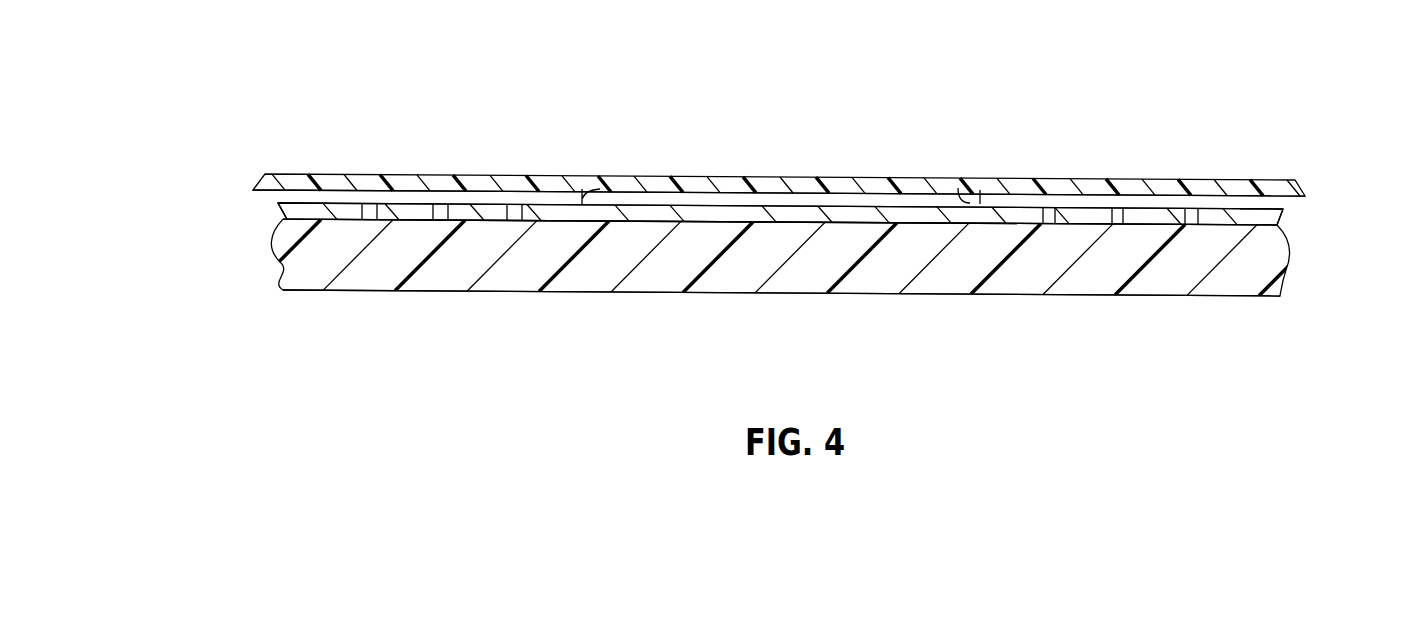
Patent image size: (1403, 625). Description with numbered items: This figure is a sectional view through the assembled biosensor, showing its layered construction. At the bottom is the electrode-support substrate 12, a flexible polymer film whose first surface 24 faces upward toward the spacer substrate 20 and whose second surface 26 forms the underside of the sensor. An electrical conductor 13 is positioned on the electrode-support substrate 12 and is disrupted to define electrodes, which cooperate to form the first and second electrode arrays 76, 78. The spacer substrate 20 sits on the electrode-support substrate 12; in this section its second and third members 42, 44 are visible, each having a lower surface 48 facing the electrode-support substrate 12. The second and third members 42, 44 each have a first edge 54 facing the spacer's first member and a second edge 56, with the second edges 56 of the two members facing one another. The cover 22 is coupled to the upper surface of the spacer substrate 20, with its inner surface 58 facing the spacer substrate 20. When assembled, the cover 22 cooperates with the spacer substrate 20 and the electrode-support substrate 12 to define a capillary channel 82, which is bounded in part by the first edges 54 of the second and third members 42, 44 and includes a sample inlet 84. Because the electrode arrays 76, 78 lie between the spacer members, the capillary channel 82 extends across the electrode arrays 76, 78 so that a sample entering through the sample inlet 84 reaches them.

The electrode-support substrate 12 is at (1092, 299).
The electrical conductor 13 is at (788, 214).
The spacer substrate 20 is at (1120, 195).
The cover 22 is at (865, 177).
The first surface 24 is at (1012, 221).
The second surface 26 is at (938, 295).
The second member 42 is at (372, 178).
The third member 44 is at (1088, 187).
The lower surface 48 is at (1043, 207).
The first edge 54 is at (480, 197).
The second edge 56 is at (600, 189).
The inner surface 58 is at (662, 192).
The first electrode array 76 is at (312, 202).
The second electrode array 78 is at (1240, 211).
The capillary channel 82 is at (282, 198).
The sample inlet 84 is at (689, 193).